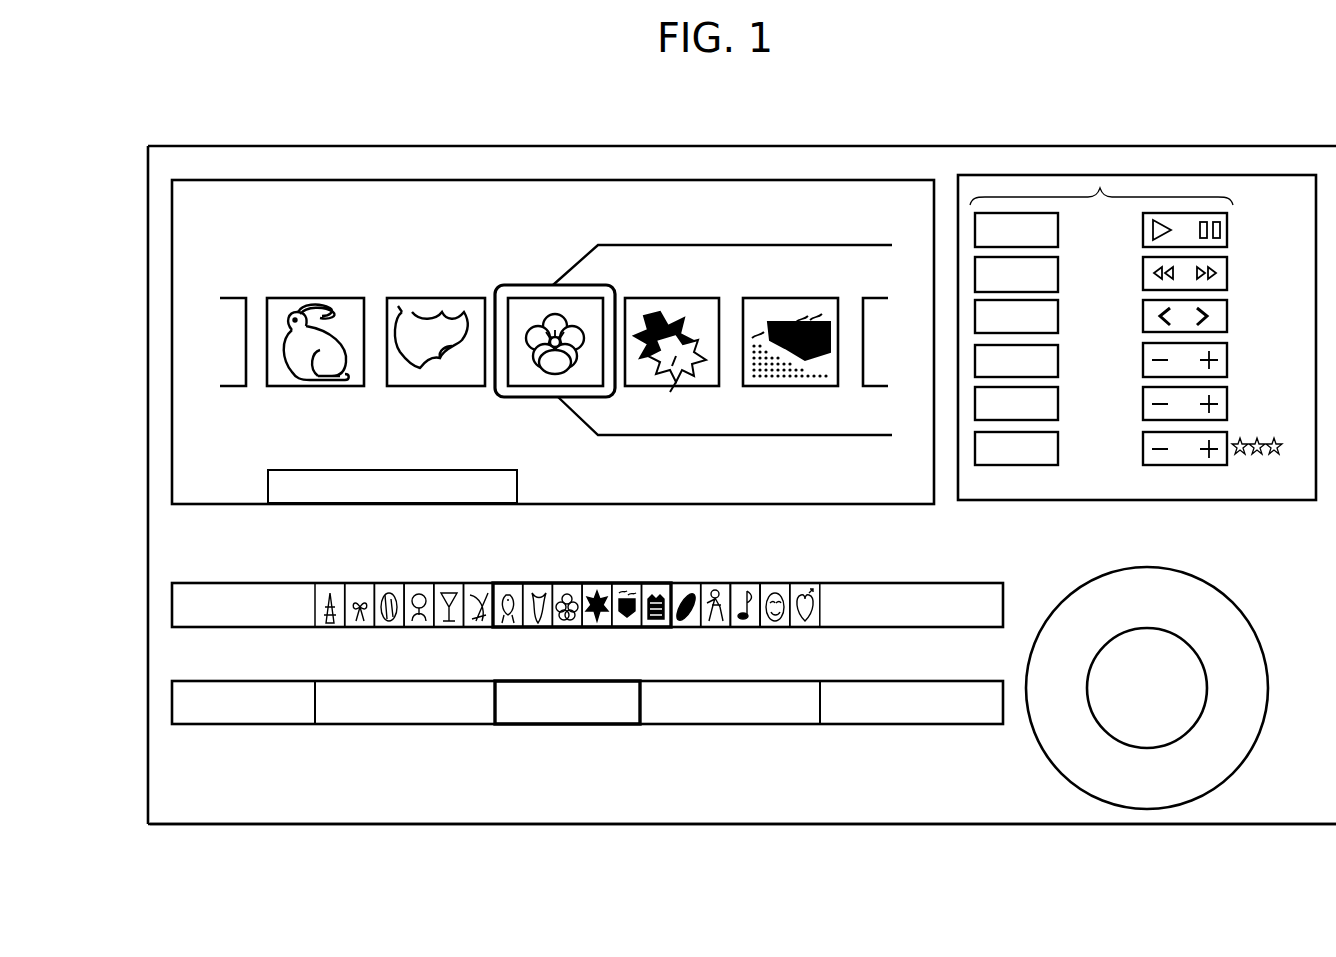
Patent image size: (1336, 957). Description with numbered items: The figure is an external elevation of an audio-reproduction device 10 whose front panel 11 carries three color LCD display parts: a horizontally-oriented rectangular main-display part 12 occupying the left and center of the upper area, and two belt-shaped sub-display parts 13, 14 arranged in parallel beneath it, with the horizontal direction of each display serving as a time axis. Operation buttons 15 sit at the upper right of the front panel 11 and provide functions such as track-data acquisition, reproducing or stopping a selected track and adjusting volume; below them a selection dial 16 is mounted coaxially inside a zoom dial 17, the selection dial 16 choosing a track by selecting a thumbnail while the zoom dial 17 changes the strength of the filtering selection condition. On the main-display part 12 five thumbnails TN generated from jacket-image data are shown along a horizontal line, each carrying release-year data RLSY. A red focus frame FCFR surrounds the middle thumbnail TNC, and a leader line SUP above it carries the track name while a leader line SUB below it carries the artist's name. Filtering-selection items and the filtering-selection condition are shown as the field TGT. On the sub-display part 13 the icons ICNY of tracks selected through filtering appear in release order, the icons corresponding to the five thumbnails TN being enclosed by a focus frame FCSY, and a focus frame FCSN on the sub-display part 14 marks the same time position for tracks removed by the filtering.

The audio-reproduction device 10 is at (555, 903).
The front panel 11 is at (193, 828).
The main-display part 12 is at (172, 235).
The sub-display part 13 is at (527, 608).
The sub-display part 14 is at (530, 731).
The operation buttons 15 is at (1100, 187).
The selection dial 16 is at (1113, 710).
The zoom dial 17 is at (1142, 797).
The focus frame FCFR is at (528, 287).
The release year data RLSY is at (322, 277).
The leader line SUP is at (817, 245).
The leader line SUB is at (767, 435).
The thumbnail TN is at (195, 398).
The middle thumbnail TNC is at (527, 392).
The filtering-selection items and condition TGT is at (353, 505).
The focus frame FCSY is at (582, 583).
The icon ICNY is at (752, 583).
The focus frame FCSN is at (577, 727).